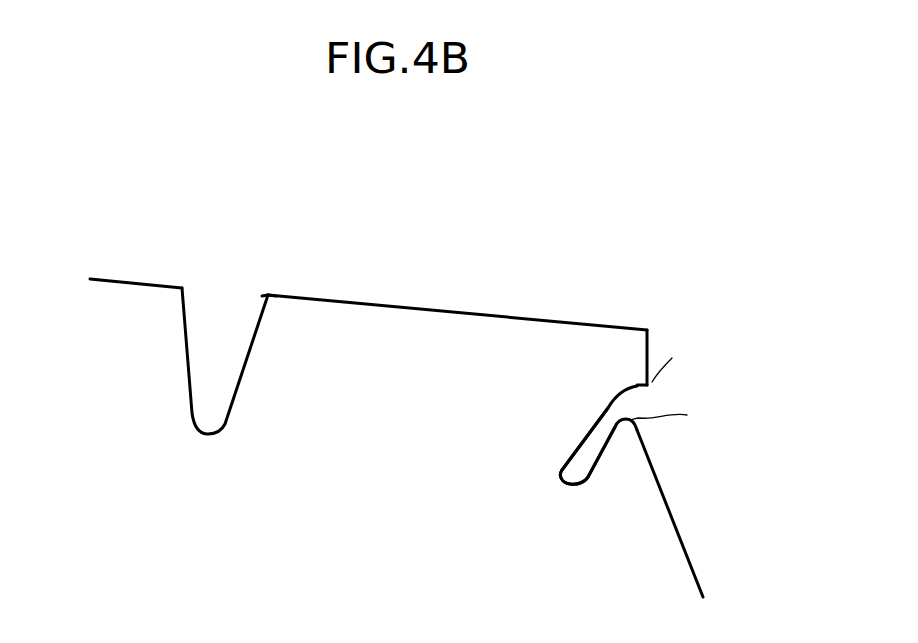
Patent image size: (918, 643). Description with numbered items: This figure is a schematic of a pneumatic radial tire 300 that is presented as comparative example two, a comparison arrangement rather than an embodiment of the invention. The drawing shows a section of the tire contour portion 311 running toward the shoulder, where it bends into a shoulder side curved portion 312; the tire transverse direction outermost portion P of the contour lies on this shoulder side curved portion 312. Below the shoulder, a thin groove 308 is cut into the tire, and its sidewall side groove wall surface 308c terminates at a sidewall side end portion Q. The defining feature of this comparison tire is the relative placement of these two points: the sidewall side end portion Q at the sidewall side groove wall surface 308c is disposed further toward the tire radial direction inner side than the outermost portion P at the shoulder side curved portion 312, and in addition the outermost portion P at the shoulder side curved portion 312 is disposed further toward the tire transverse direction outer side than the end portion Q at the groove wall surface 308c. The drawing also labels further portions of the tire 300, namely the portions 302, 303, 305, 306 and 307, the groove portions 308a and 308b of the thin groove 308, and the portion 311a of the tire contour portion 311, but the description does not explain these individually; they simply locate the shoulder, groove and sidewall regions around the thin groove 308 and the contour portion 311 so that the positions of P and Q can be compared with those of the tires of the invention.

The pneumatic radial tire 300 is at (85, 193).
The corner portion 302 is at (279, 271).
The inclined surface 303 is at (467, 287).
The side wall 305 is at (686, 518).
The groove 306 is at (220, 315).
The flat surface portion 307 is at (130, 298).
The thin groove 308 is at (593, 433).
The tip of projection 308a is at (567, 478).
The first side surface of projection 308b is at (580, 433).
The sidewall side groove wall surface 308c is at (602, 463).
The tire contour portion 311 is at (663, 352).
The bottom edge of wall portion 311a is at (647, 345).
The shoulder side curved portion 312 is at (627, 382).